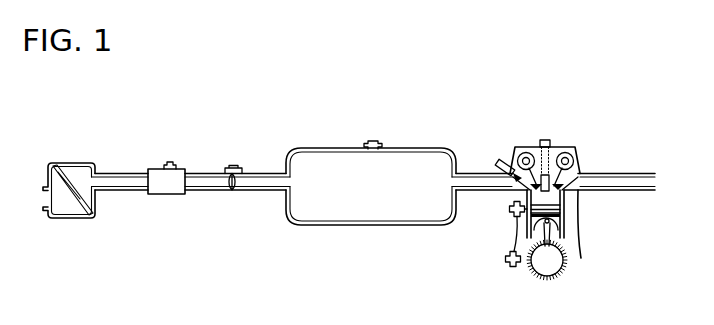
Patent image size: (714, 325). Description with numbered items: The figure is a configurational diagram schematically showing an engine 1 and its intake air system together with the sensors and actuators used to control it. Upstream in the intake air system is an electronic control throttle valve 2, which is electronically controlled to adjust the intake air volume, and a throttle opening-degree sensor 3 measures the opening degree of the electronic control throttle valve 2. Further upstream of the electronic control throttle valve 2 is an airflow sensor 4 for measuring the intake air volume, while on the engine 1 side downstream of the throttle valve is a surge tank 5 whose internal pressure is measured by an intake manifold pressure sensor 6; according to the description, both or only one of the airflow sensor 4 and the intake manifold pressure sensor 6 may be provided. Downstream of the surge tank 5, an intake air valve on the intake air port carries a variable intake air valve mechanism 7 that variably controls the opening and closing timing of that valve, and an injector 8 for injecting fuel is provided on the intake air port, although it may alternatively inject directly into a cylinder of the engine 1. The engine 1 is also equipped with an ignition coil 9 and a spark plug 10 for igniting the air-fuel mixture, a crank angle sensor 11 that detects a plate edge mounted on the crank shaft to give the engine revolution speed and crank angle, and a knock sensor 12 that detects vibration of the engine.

The engine 1 is at (570, 205).
The electronic control throttle valve 2 is at (236, 192).
The throttle opening-degree sensor 3 is at (233, 170).
The airflow sensor 4 is at (168, 170).
The surge tank 5 is at (367, 214).
The intake manifold pressure sensor 6 is at (376, 146).
The variable intake air valve mechanism 7 is at (521, 160).
The injector 8 is at (501, 165).
The ignition coil 9 is at (544, 141).
The spark plug 10 is at (579, 156).
The crank angle sensor 11 is at (506, 259).
The knock sensor 12 is at (511, 209).